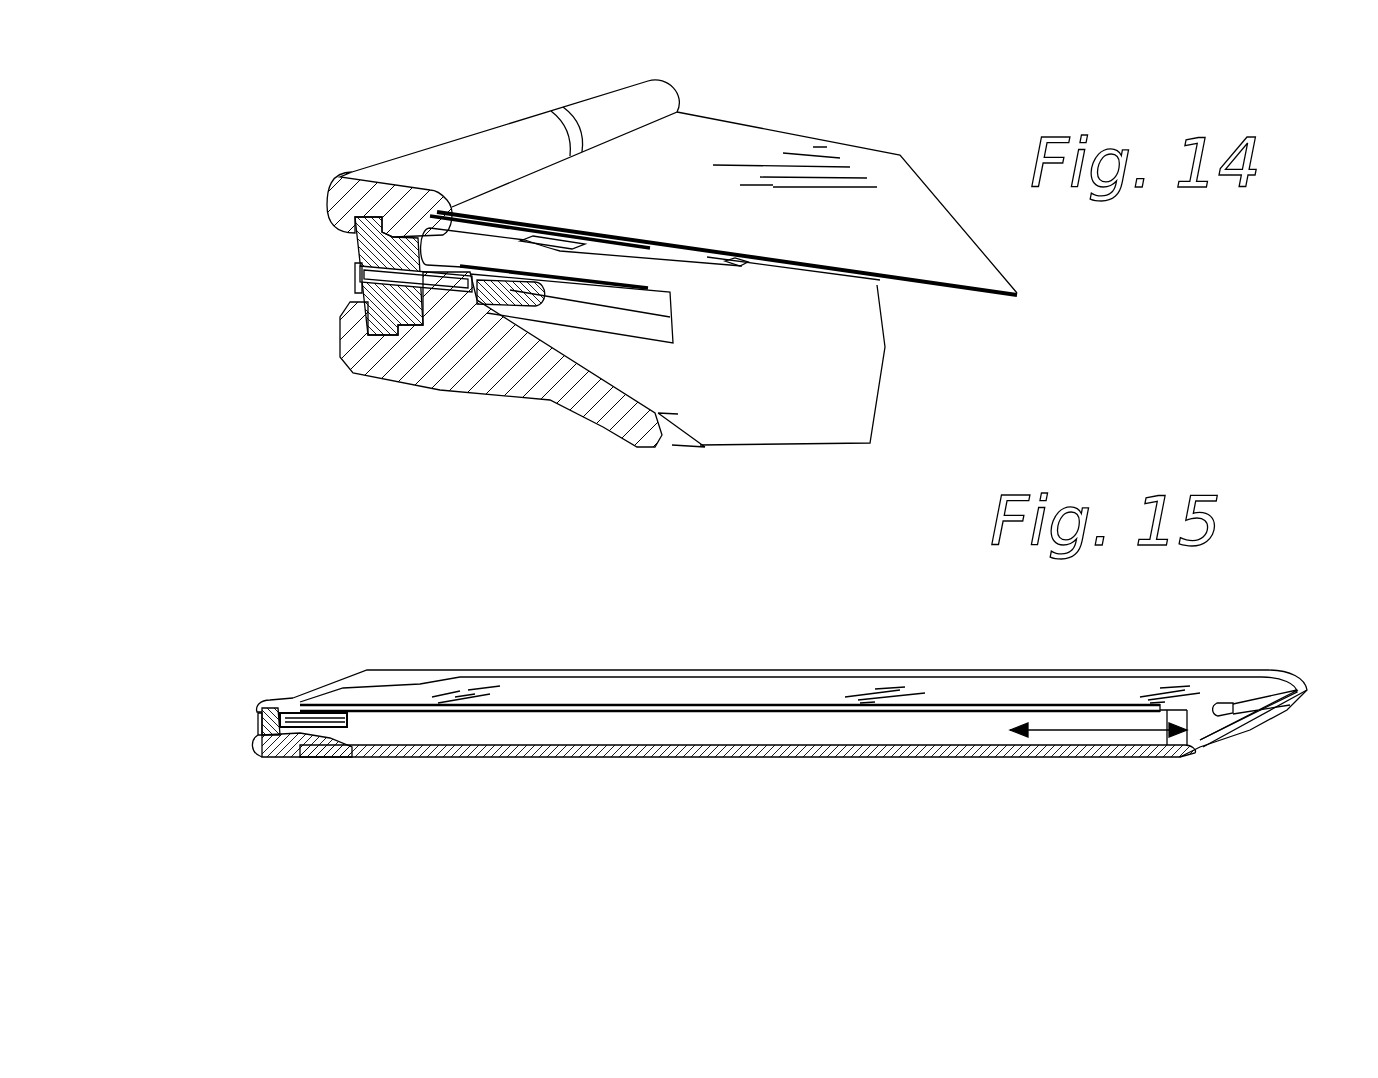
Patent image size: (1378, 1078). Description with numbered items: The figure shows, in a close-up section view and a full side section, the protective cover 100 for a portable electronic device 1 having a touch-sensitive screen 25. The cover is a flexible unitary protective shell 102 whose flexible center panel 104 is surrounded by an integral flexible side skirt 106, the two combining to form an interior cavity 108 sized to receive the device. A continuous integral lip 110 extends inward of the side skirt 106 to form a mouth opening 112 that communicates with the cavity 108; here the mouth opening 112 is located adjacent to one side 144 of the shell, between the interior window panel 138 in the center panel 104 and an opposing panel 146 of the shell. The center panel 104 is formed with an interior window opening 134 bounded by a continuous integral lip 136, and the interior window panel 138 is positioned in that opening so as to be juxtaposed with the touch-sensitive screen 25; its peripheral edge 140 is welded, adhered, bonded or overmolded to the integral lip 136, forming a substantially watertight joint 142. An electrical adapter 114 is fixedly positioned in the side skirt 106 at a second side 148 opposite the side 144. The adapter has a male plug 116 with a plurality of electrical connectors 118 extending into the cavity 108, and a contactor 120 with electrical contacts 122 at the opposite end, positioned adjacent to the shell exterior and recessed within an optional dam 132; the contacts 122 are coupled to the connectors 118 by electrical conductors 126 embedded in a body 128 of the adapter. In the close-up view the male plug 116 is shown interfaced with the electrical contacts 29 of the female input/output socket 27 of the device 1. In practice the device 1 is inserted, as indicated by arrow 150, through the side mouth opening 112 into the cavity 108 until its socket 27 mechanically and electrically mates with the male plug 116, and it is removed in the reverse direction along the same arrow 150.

In FIG. 14, the portable electronic device 1 is at (795, 400).
In FIG. 15, the portable electronic device 1 is at (670, 730).
In FIG. 14, the touch-sensitive screen 25 is at (790, 273).
In FIG. 15, the touch-sensitive screen 25 is at (797, 710).
In FIG. 14, the female input/output socket 27 is at (670, 302).
In FIG. 15, the female input/output socket 27 is at (337, 757).
In FIG. 14, the electrical contacts 29 is at (615, 312).
In FIG. 14, the protective cover 100 is at (757, 117).
In FIG. 15, the protective cover 100 is at (537, 668).
In FIG. 15, the unitary protective shell 102 is at (777, 757).
In FIG. 15, the center panel 104 is at (710, 677).
In FIG. 14, the side skirt 106 is at (577, 417).
In FIG. 15, the side skirt 106 is at (313, 747).
In FIG. 14, the interior cavity 108 is at (927, 374).
In FIG. 15, the interior cavity 108 is at (1023, 750).
In FIG. 14, the continuous integral lip 110 is at (667, 443).
In FIG. 15, the continuous integral lip 110 is at (1263, 690).
In FIG. 14, the mouth opening 112 is at (670, 420).
In FIG. 15, the mouth opening 112 is at (1243, 750).
In FIG. 14, the adapter 114 is at (360, 220).
In FIG. 15, the adapter 114 is at (258, 747).
In FIG. 14, the male plug 116 is at (533, 303).
In FIG. 14, the electrical connectors 118 is at (478, 268).
In FIG. 15, the electrical connectors 118 is at (300, 700).
In FIG. 14, the contactor 120 is at (353, 250).
In FIG. 15, the contactor 120 is at (260, 713).
In FIG. 14, the electrical contacts 122 is at (353, 283).
In FIG. 15, the electrical contacts 122 is at (260, 725).
In FIG. 14, the electrical conductors 126 is at (387, 290).
In FIG. 14, the body 128 is at (417, 327).
In FIG. 15, the body 128 is at (270, 747).
In FIG. 14, the dam 132 is at (327, 200).
In FIG. 15, the dam 132 is at (257, 697).
In FIG. 14, the interior window opening 134 is at (593, 147).
In FIG. 15, the interior window opening 134 is at (343, 687).
In FIG. 14, the continuous integral lip 136 is at (663, 103).
In FIG. 15, the continuous integral lip 136 is at (1250, 690).
In FIG. 14, the interior window panel 138 is at (797, 234).
In FIG. 15, the interior window panel 138 is at (923, 693).
In FIG. 14, the peripheral edge 140 is at (430, 190).
In FIG. 15, the peripheral edge 140 is at (607, 683).
In FIG. 14, the watertight joint 142 is at (503, 187).
In FIG. 15, the watertight joint 142 is at (323, 693).
In FIG. 15, the side 144 is at (1293, 683).
In FIG. 15, the opposing panel 146 is at (917, 757).
In FIG. 15, the second side 148 is at (293, 697).
In FIG. 15, the arrow 150 is at (1107, 757).